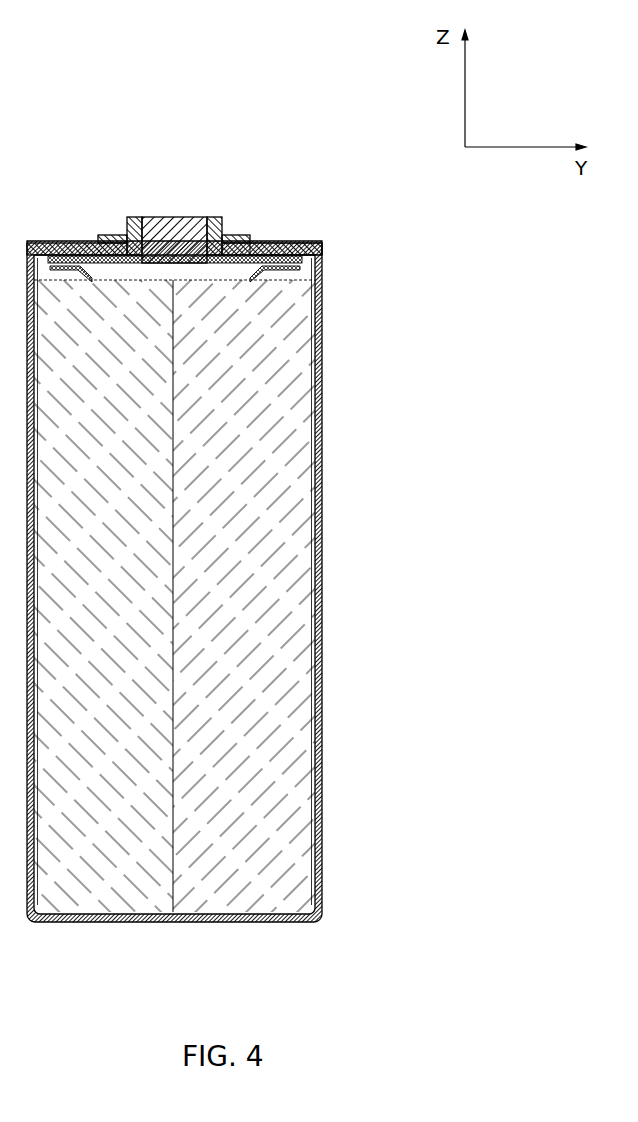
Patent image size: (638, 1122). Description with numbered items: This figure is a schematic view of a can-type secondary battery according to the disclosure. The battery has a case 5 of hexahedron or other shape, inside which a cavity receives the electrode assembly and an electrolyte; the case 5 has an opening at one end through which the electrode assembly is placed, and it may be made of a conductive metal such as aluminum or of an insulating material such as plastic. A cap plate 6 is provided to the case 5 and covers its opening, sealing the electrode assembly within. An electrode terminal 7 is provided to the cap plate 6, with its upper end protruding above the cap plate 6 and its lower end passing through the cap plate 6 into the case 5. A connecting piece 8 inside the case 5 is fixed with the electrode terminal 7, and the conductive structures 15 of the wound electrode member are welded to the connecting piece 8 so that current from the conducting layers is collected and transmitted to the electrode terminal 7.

The case 5 is at (322, 392).
The cap plate 6 is at (75, 243).
The electrode terminal 7 is at (172, 216).
The connecting piece 8 is at (262, 240).
The conductive structure 15 is at (297, 244).